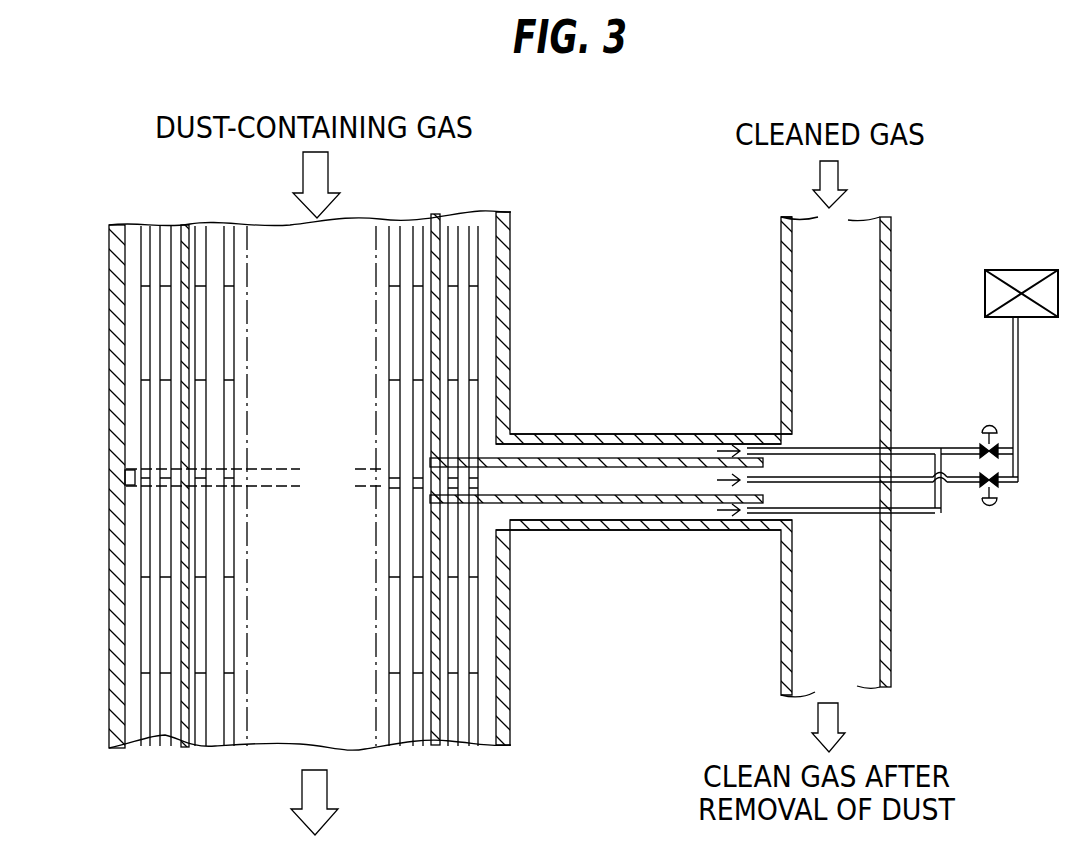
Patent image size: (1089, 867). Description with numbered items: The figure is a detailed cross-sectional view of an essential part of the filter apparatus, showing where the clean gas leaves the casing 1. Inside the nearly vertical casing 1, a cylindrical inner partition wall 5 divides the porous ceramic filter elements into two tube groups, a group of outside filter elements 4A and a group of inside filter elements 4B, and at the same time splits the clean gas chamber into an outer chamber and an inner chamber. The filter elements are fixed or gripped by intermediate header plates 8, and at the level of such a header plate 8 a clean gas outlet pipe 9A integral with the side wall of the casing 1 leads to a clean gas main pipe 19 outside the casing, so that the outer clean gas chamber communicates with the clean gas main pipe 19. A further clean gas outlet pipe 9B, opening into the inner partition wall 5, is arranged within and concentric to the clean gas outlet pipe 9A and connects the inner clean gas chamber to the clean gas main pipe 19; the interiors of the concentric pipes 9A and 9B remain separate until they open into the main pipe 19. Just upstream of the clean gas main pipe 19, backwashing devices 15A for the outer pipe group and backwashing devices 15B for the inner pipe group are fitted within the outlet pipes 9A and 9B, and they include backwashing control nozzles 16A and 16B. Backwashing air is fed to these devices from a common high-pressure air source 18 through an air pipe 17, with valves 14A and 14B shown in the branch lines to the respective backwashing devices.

The casing 1 is at (511, 262).
The outside filter elements 4A is at (453, 630).
The inside filter elements 4B is at (212, 532).
The inner cylindrical partition wall 5 is at (437, 318).
The intermediate header plates 8 is at (130, 487).
The clean gas outlet pipes 9A is at (602, 434).
The clean gas outlet pipes 9B is at (542, 458).
The valve 14A is at (976, 425).
The valve 14B is at (998, 508).
The backwashing devices for the outer pipe group 15A is at (880, 482).
The backwashing devices for the inner pipe group 15B is at (882, 493).
The backwashing control nozzles 16A is at (742, 513).
The backwashing control nozzles 16B is at (712, 482).
The air pipe 17 is at (1011, 355).
The high-pressure air source 18 is at (1020, 270).
The clean gas main pipe 19 is at (890, 613).